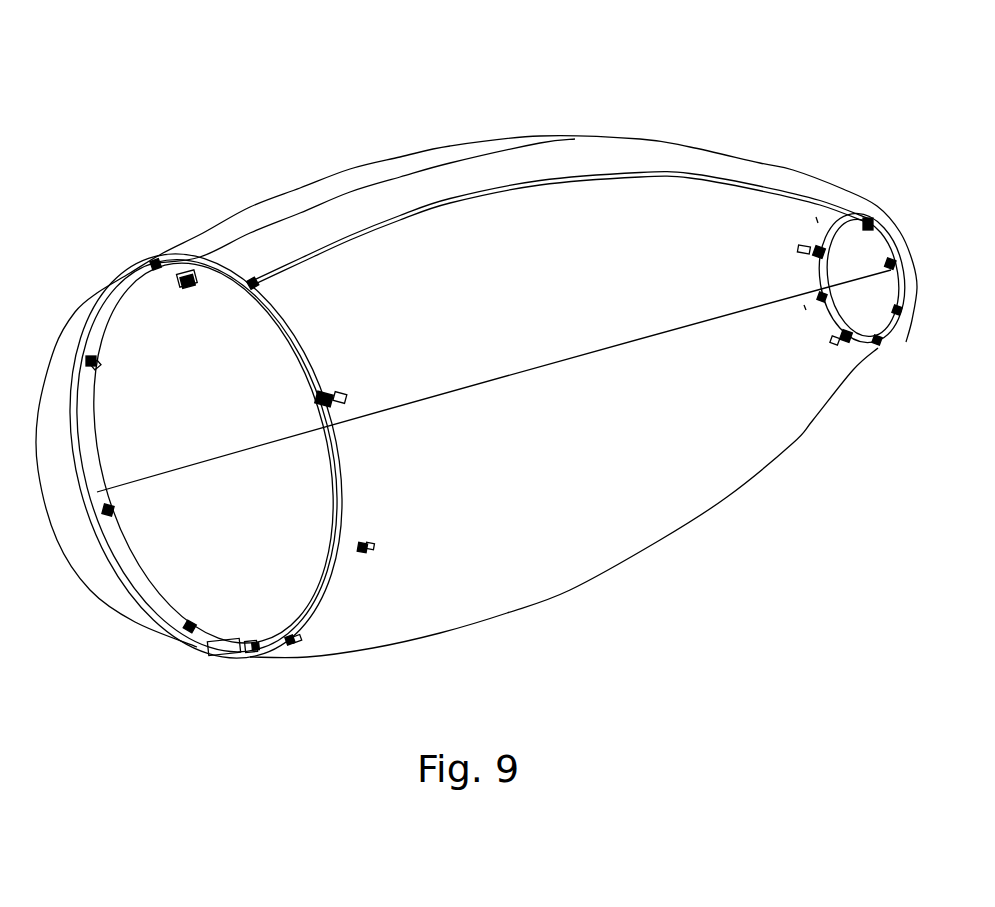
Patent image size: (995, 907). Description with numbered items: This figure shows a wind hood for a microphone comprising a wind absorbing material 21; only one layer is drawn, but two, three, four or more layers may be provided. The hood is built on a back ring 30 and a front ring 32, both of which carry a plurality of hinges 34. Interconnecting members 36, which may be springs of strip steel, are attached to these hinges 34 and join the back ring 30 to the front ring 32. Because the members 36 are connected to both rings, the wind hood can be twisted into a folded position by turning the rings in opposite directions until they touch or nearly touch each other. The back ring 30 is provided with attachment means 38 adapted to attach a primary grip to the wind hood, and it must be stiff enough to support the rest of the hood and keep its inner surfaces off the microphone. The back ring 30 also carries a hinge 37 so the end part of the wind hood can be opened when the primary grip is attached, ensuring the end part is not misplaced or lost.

The wind absorbing material 21 is at (393, 188).
The back ring 30 is at (323, 597).
The front ring 32 is at (906, 342).
The hinges 34 is at (344, 396).
The interconnecting members 36 is at (353, 237).
The hinge 37 is at (188, 292).
The attachment means 38 is at (228, 649).